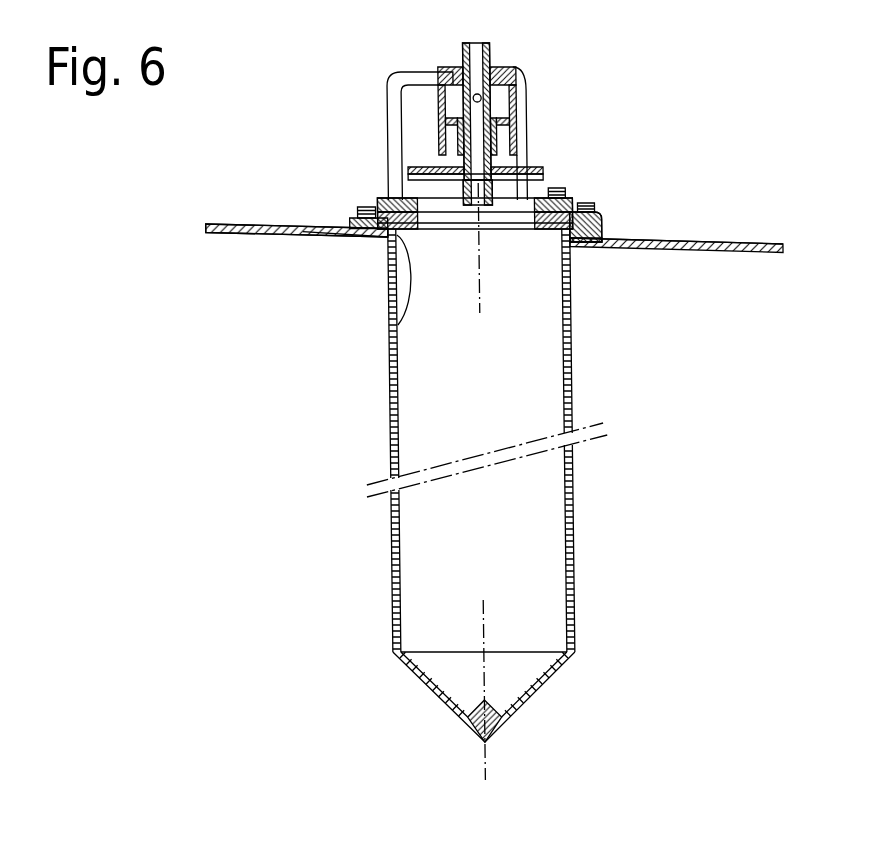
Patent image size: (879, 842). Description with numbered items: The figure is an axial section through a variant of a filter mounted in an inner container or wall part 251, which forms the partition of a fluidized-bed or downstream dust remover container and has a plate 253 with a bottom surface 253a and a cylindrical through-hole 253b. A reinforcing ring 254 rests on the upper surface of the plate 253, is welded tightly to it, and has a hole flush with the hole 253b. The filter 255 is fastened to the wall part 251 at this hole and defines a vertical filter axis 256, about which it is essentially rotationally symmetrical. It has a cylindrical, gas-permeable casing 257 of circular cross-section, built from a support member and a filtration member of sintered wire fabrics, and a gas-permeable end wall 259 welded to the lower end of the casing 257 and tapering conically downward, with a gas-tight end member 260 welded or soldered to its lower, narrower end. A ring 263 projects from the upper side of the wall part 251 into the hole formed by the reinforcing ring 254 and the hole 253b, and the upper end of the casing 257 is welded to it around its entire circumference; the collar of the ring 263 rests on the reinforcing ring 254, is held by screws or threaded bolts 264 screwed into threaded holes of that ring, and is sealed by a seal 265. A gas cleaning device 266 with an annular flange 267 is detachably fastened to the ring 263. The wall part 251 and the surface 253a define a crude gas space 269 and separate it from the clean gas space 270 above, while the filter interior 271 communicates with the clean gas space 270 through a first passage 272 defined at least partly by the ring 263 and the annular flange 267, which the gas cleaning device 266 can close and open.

The inner container or wall part 251 is at (298, 237).
The plate 253 is at (205, 227).
The surface 253a is at (340, 240).
The cylindrical through-hole 253b is at (387, 330).
The reinforcing ring 254 is at (605, 230).
The filter 255 is at (390, 395).
The vertical filter axis 256 is at (485, 752).
The cylindrical gas-permeable casing 257 is at (390, 543).
The end wall 259 is at (435, 697).
The gas-tight end member 260 is at (497, 733).
The ring 263 is at (603, 213).
The screws or threaded bolts 264 is at (580, 207).
The seal 265 is at (580, 243).
The gas cleaning device 266 is at (532, 113).
The annular flange 267 is at (382, 203).
The crude gas space 269 is at (717, 280).
The clean gas space 270 is at (717, 210).
The filter interior 271 is at (540, 413).
The first passage 272 is at (510, 220).